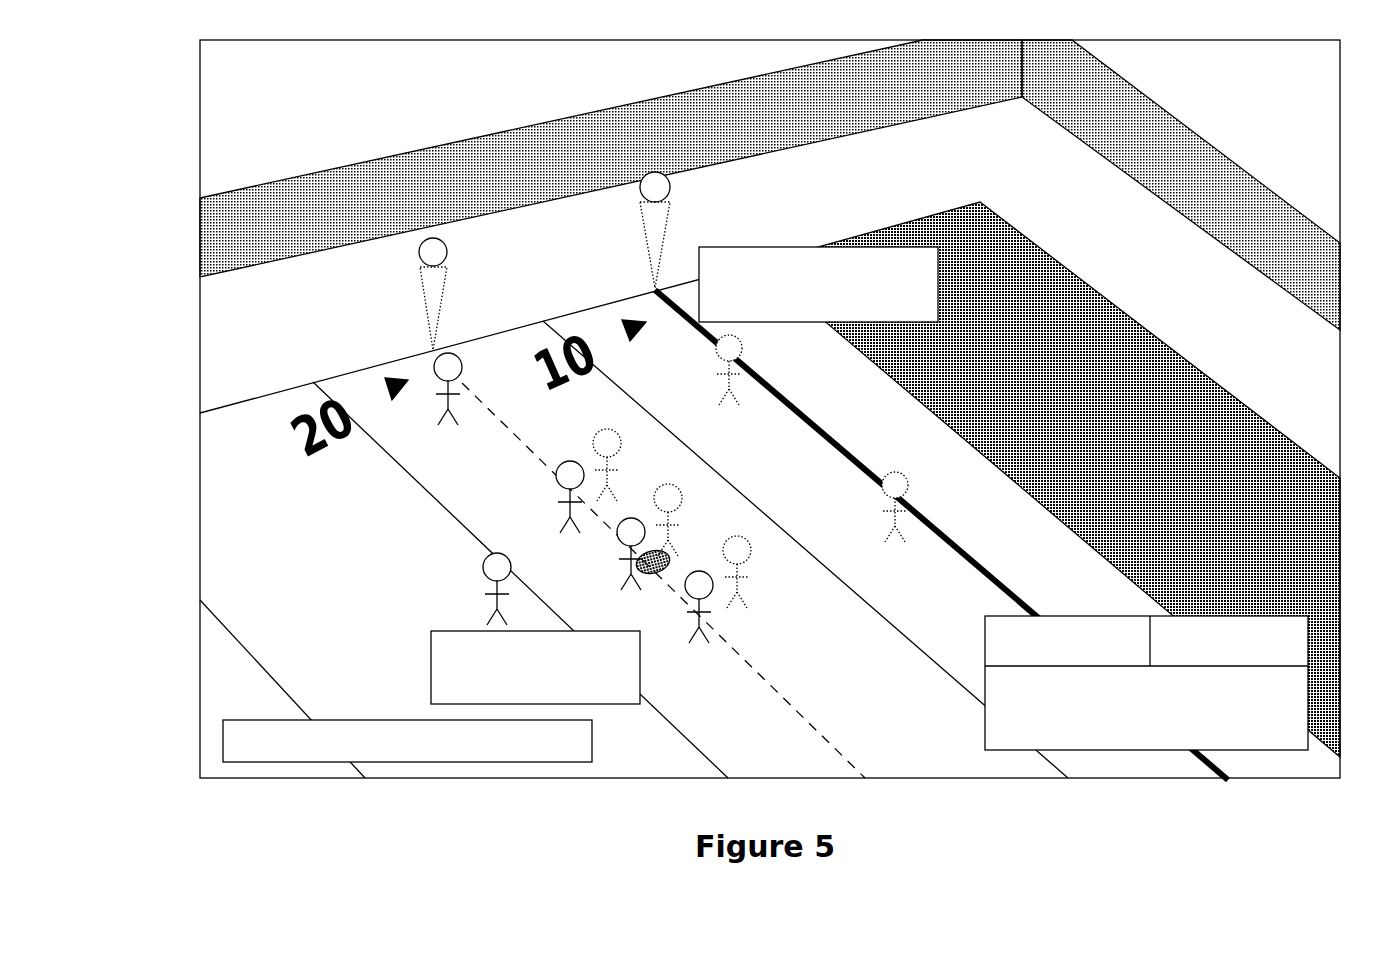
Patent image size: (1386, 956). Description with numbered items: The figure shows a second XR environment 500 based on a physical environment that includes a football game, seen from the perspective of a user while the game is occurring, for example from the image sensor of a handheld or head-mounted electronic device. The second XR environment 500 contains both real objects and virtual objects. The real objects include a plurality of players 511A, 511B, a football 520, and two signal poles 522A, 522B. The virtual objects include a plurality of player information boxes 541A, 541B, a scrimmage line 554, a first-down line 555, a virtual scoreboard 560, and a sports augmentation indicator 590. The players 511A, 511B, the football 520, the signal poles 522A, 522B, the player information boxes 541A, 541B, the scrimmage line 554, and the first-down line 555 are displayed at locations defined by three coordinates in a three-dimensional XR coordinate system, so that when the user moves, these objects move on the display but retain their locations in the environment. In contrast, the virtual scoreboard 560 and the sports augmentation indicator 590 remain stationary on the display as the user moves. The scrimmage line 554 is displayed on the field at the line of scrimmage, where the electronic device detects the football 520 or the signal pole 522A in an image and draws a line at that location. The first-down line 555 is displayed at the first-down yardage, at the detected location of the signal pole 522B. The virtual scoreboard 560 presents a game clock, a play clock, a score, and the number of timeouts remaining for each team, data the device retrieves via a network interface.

The second XR environment 500 is at (336, 40).
The player 511A is at (468, 549).
The player 511B is at (734, 418).
The football 520 is at (662, 575).
The signal pole 522A is at (425, 300).
The signal pole 522B is at (646, 243).
The player information box 541A is at (462, 631).
The player information box 541B is at (757, 247).
The scrimmage line 554 is at (772, 682).
The first-down line 555 is at (955, 545).
The virtual scoreboard 560 is at (1058, 616).
The sports augmentation indicator 590 is at (395, 720).